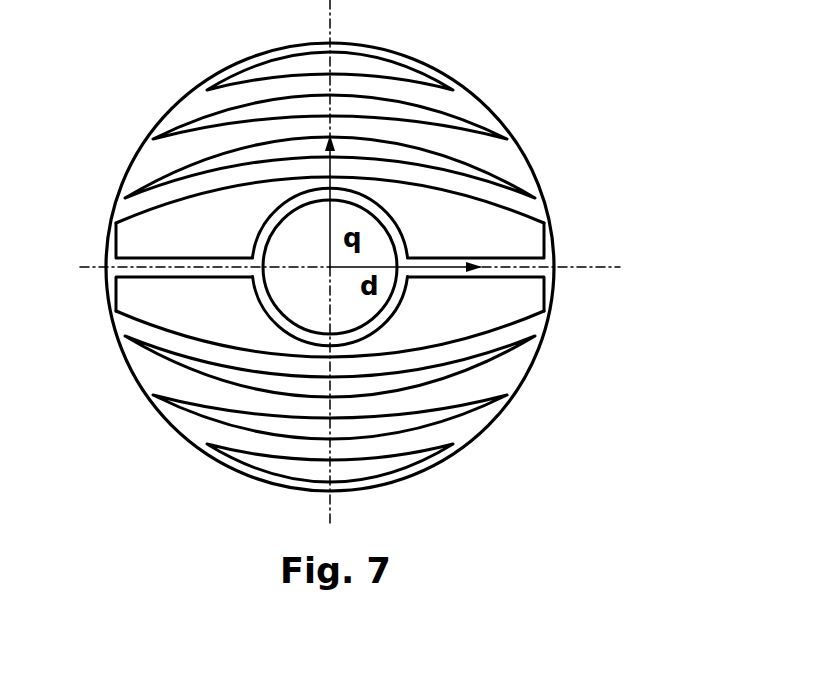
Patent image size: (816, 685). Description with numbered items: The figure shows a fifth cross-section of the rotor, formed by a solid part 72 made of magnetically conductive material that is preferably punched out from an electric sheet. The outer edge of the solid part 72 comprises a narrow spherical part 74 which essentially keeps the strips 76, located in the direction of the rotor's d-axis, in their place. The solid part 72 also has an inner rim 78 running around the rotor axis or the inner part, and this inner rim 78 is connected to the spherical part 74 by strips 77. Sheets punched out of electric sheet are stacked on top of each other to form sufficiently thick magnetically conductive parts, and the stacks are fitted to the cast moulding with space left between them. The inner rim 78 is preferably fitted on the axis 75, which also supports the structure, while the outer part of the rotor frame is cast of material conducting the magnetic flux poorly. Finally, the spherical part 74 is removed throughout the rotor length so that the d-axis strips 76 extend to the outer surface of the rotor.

The solid part 72 is at (482, 68).
The spherical part 74 is at (473, 190).
The strips 76 is at (428, 92).
The strips 77 is at (522, 263).
The inner rim 78 is at (398, 232).
The axis 75 is at (343, 303).